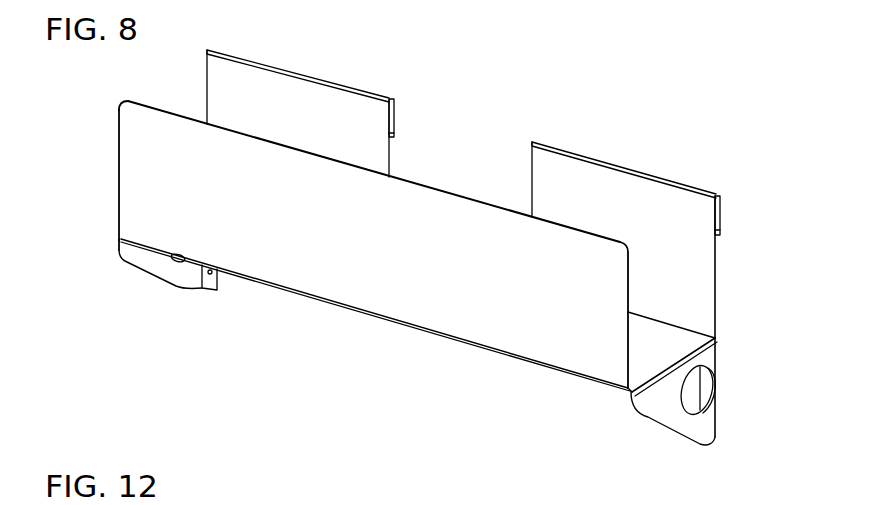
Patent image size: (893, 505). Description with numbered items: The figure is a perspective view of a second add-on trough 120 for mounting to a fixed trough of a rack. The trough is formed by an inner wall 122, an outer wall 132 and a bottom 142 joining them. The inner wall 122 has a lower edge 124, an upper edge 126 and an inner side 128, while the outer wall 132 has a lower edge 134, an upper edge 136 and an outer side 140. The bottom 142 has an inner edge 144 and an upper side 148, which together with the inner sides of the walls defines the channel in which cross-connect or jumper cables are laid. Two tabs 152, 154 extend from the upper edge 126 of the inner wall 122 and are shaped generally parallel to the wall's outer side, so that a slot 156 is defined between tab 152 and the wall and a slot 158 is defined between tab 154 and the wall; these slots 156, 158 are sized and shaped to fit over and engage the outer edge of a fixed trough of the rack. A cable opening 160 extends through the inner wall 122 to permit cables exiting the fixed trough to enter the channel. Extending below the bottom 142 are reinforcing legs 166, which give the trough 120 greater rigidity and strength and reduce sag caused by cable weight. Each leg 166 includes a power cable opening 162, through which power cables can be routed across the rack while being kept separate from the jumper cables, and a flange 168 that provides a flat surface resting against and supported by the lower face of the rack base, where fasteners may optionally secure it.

In FIG. 8, the add-on trough 120 is at (112, 88).
In FIG. 8, the inner wall 122 is at (215, 81).
In FIG. 8, the lower edge of inner wall 124 is at (700, 330).
In FIG. 8, the upper edge of inner wall 126 is at (207, 47).
In FIG. 12, the upper edge of inner wall 126 is at (535, 498).
In FIG. 8, the inner side of inner wall 128 is at (310, 119).
In FIG. 8, the outer wall 132 is at (130, 178).
In FIG. 8, the lower edge of outer wall 134 is at (395, 319).
In FIG. 8, the upper edge of outer wall 136 is at (430, 191).
In FIG. 8, the outer side of outer wall 140 is at (347, 251).
In FIG. 8, the bottom 142 is at (688, 347).
In FIG. 8, the inner edge of bottom 144 is at (676, 369).
In FIG. 8, the upper side of bottom 148 is at (665, 357).
In FIG. 8, the tab 152 is at (720, 210).
In FIG. 8, the tab 154 is at (395, 107).
In FIG. 8, the slot 156 is at (720, 232).
In FIG. 8, the slot 158 is at (394, 128).
In FIG. 8, the cable opening 160 is at (517, 170).
In FIG. 12, the cable opening 160 is at (360, 498).
In FIG. 8, the power cable opening 162 is at (175, 260).
In FIG. 8, the reinforcing leg 166 is at (180, 287).
In FIG. 8, the flange 168 is at (212, 289).